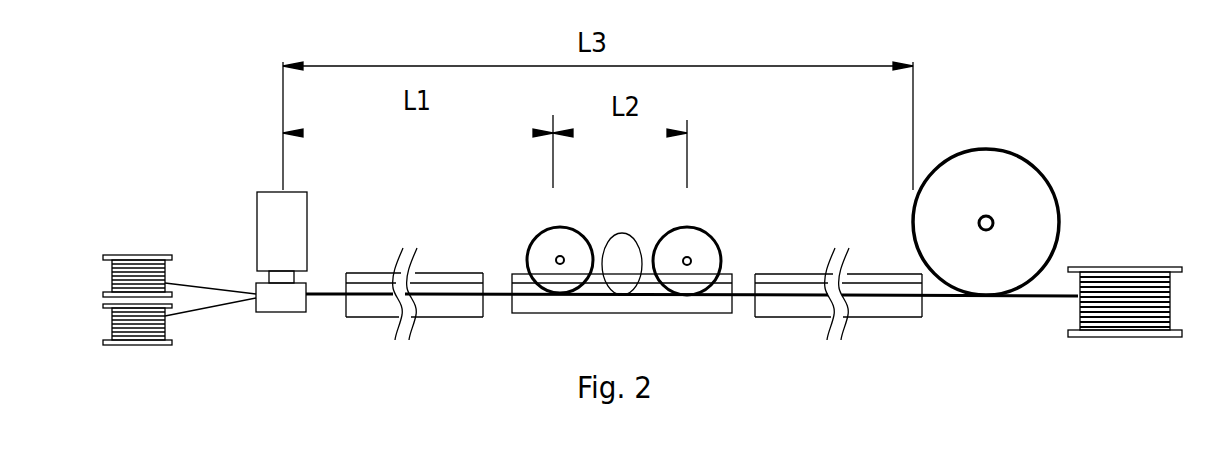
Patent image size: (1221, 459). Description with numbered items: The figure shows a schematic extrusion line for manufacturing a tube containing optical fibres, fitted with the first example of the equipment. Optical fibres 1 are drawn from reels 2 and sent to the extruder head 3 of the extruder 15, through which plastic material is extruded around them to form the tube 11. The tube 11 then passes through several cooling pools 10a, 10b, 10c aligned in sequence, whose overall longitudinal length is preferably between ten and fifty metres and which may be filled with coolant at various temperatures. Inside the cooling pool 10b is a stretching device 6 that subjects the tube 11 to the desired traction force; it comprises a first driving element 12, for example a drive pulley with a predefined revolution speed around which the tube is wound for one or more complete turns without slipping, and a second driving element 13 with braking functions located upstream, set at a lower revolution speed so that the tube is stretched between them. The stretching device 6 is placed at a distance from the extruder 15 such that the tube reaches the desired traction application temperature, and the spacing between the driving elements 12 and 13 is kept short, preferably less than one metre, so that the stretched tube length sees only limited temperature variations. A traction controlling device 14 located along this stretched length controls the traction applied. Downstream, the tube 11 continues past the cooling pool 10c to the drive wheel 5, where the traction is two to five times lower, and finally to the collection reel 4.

The optical fibre 1 is at (195, 285).
The reel 2 is at (125, 257).
The extruder head 3 is at (288, 302).
The final collection reel 4 is at (1145, 268).
The stretching device 5 is at (927, 213).
The stretching device 6 is at (576, 217).
The cooling pool 10a is at (435, 308).
The cooling pool 10b is at (663, 302).
The cooling pool 10c is at (887, 310).
The tube 11 is at (319, 297).
The first driving element 12 is at (677, 243).
The second driving element 13 is at (535, 248).
The traction controlling device 14 is at (616, 250).
The extruder 15 is at (295, 232).